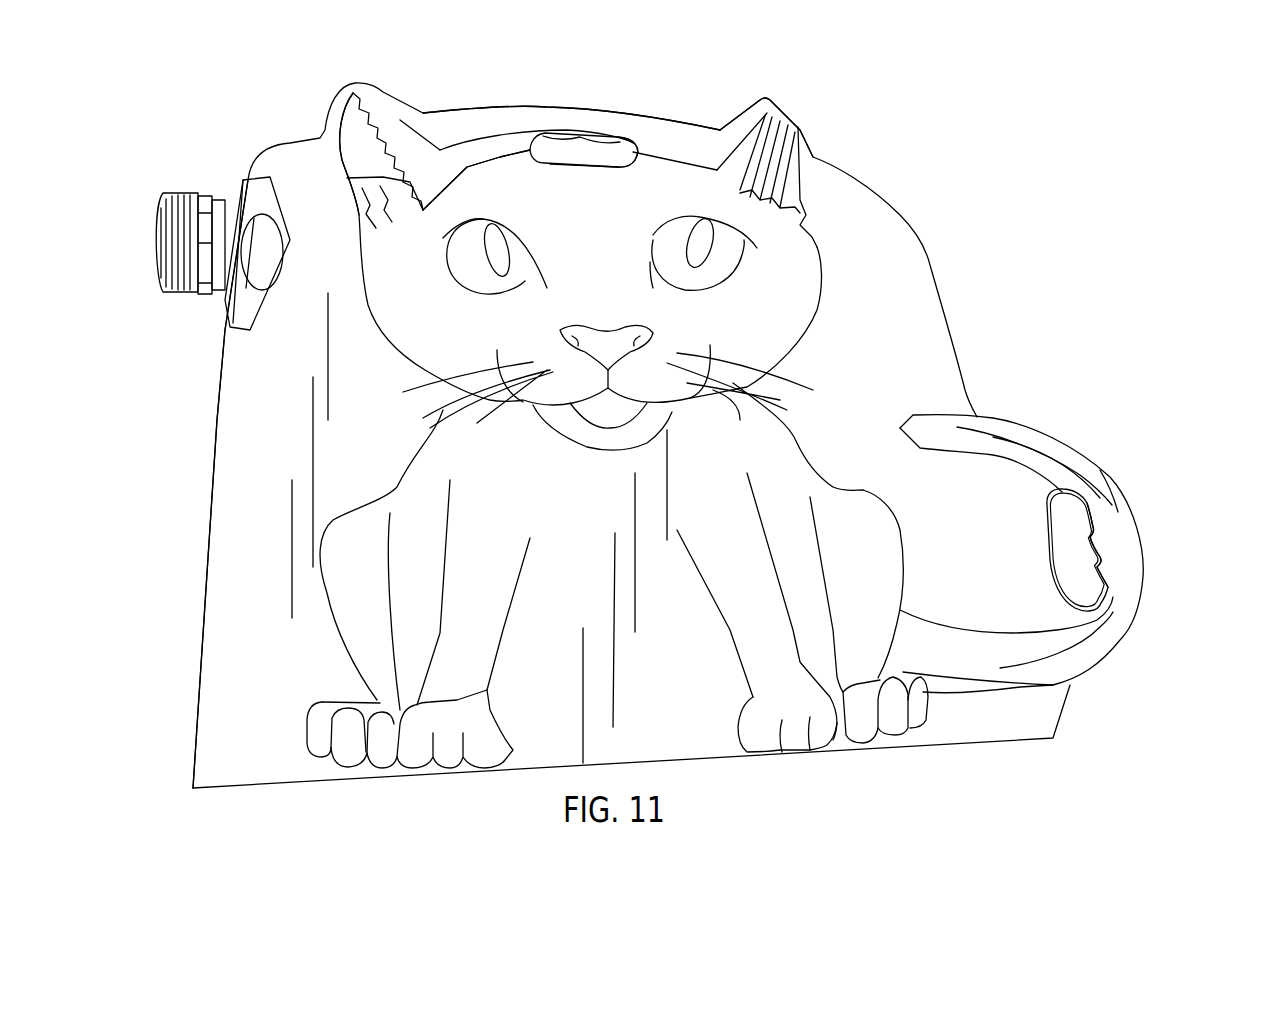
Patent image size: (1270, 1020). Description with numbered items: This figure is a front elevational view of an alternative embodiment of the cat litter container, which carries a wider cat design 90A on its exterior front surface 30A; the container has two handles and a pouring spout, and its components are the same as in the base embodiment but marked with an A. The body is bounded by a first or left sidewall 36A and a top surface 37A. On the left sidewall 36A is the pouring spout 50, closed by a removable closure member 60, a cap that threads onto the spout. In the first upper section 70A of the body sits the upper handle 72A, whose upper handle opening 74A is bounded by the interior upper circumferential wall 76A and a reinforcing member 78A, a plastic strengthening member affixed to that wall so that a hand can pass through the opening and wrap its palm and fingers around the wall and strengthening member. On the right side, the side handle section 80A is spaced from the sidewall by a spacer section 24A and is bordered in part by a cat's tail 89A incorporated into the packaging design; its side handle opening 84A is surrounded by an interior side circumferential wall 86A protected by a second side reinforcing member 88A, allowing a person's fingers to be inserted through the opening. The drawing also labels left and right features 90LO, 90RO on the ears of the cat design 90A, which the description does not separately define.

The removable closure member 60 is at (168, 215).
The pouring spout 50 is at (215, 198).
The first or left sidewall 36A is at (218, 398).
The top surface 37A is at (648, 125).
The exterior front surface 30A is at (912, 370).
The spacer section 24A is at (1006, 558).
The wider cat design 90A is at (609, 506).
The left ear portion of indicia 90LO is at (370, 188).
The right ear portion of indicia 90RO is at (783, 148).
The first upper section 70A is at (467, 163).
The interior upper circumferential wall 76A is at (543, 157).
The upper handle opening 74A is at (587, 157).
The upper handle 72A is at (618, 170).
The reinforcing member 78A is at (637, 157).
The side handle section 80A is at (1150, 483).
The side handle opening 84A is at (1077, 523).
The interior side circumferential wall 86A is at (1060, 490).
The second side reinforcing member 88A is at (1117, 563).
The cat's tail 89A is at (1110, 500).